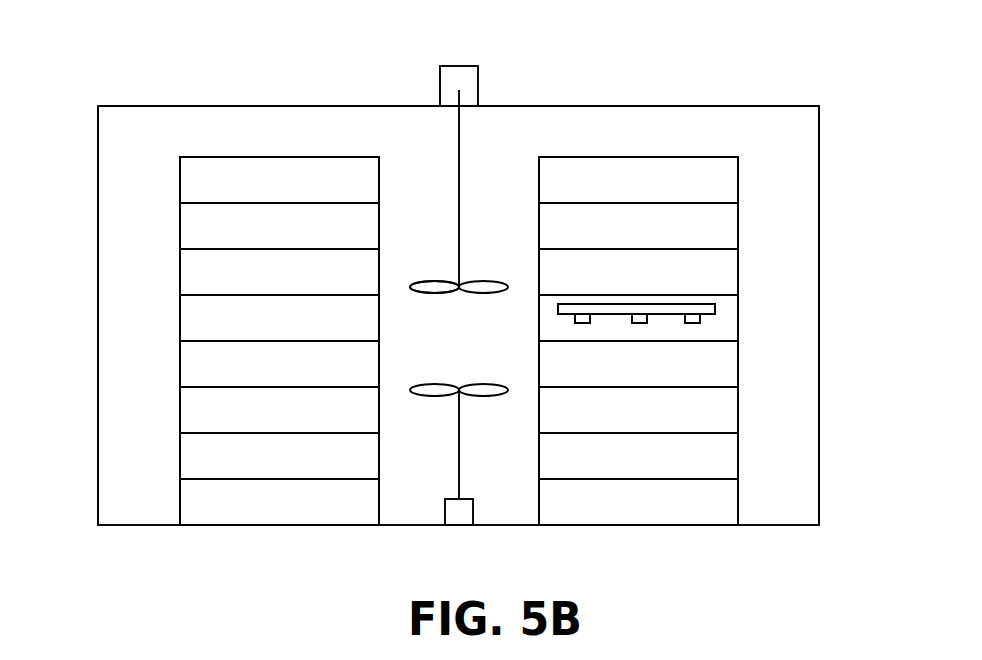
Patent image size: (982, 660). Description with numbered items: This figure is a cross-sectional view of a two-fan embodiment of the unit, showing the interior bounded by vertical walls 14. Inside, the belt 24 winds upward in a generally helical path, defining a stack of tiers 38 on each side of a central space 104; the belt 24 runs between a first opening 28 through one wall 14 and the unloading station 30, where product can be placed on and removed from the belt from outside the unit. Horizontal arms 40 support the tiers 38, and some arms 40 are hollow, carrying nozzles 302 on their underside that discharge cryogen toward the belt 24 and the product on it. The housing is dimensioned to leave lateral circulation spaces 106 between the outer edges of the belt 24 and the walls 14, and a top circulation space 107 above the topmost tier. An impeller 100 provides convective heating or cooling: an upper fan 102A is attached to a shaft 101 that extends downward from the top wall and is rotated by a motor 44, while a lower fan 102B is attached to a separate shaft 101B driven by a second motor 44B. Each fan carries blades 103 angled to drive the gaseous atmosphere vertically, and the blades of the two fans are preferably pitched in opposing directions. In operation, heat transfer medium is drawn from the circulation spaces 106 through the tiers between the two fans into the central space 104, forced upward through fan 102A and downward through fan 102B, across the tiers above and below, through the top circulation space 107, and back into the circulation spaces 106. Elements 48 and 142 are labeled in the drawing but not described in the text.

The vertical walls 14 is at (99, 257).
The belt 24 is at (263, 387).
The first opening 28 is at (180, 479).
The unloading station 30 is at (738, 158).
The tiers 38 is at (459, 295).
The horizontal arms 40 is at (582, 310).
The motor 44 is at (478, 80).
The motor 44B is at (459, 516).
The tray slot 48 is at (279, 272).
The impeller 100 is at (430, 155).
The shaft 101 is at (460, 168).
The shaft 101B is at (484, 444).
The fan 102A is at (494, 282).
The fan 102B is at (497, 396).
The blades 103 is at (435, 293).
The central space 104 is at (459, 341).
The lateral circulation spaces 106 is at (458, 315).
The top circulation space 107 is at (458, 131).
The tray plate 142 is at (715, 308).
The nozzles 302 is at (580, 323).